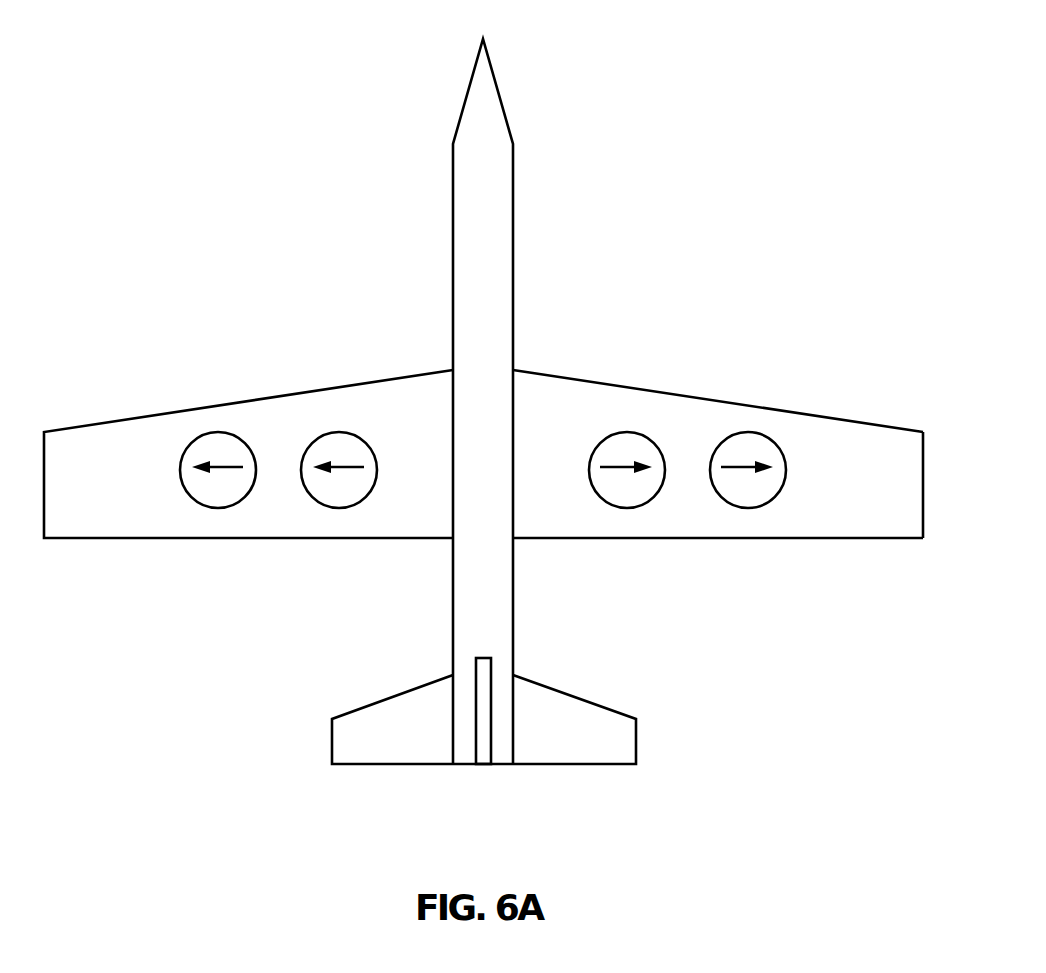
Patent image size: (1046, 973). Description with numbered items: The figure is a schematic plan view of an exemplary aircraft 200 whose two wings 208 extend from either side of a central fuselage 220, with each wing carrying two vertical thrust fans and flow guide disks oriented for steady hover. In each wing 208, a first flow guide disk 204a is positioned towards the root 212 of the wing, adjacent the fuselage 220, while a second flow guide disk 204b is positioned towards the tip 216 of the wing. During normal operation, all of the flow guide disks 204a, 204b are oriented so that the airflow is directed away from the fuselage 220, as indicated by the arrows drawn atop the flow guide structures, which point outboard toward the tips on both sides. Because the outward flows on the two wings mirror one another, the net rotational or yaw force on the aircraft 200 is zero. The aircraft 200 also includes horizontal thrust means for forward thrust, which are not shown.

The aircraft 200 is at (379, 96).
The fuselage 220 is at (513, 163).
The root 212 is at (535, 348).
The wing 208 is at (818, 420).
The tip 216 is at (933, 512).
The flow guide disk 204a is at (338, 432).
The flow guide disk 204b is at (222, 432).